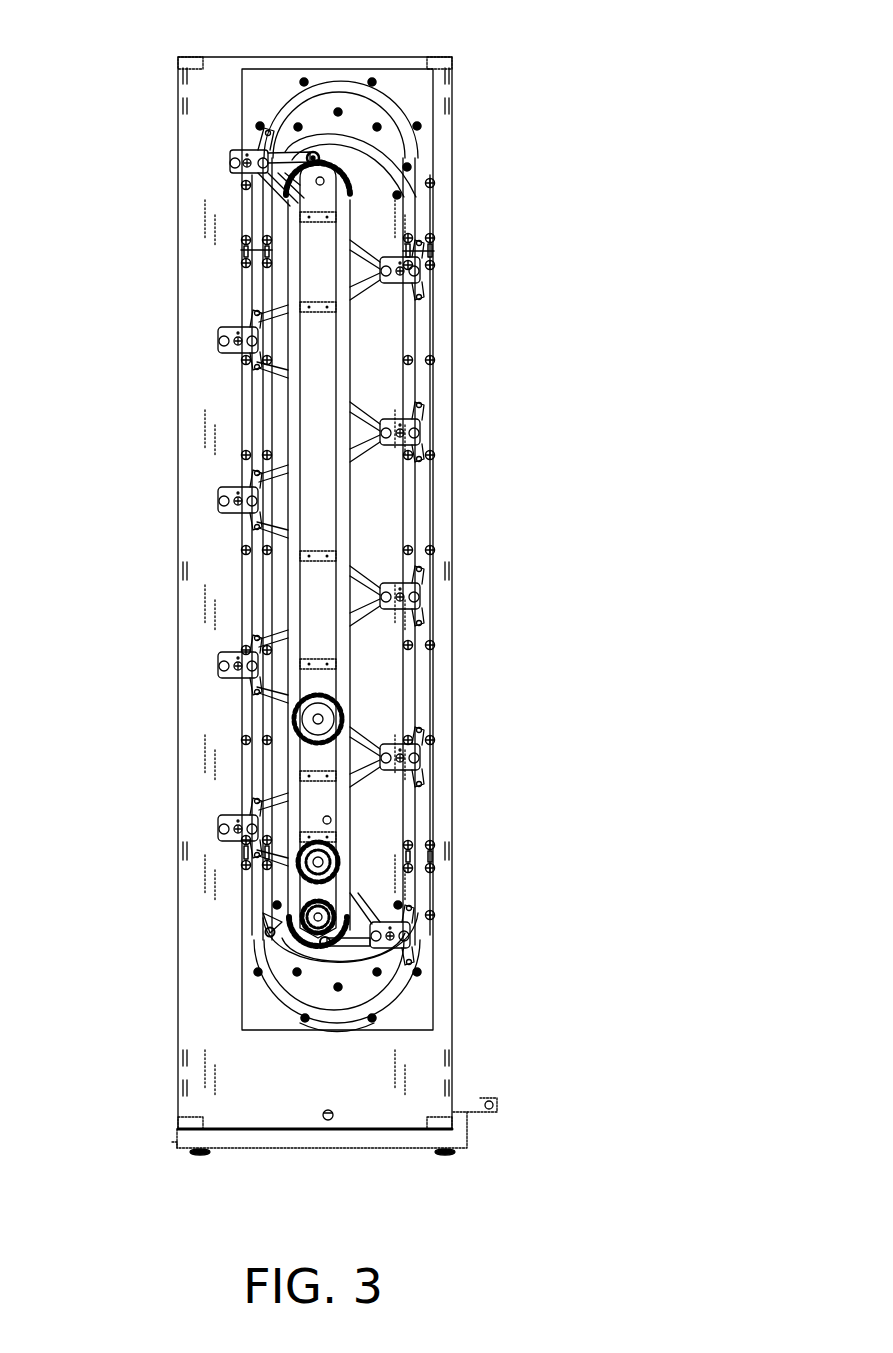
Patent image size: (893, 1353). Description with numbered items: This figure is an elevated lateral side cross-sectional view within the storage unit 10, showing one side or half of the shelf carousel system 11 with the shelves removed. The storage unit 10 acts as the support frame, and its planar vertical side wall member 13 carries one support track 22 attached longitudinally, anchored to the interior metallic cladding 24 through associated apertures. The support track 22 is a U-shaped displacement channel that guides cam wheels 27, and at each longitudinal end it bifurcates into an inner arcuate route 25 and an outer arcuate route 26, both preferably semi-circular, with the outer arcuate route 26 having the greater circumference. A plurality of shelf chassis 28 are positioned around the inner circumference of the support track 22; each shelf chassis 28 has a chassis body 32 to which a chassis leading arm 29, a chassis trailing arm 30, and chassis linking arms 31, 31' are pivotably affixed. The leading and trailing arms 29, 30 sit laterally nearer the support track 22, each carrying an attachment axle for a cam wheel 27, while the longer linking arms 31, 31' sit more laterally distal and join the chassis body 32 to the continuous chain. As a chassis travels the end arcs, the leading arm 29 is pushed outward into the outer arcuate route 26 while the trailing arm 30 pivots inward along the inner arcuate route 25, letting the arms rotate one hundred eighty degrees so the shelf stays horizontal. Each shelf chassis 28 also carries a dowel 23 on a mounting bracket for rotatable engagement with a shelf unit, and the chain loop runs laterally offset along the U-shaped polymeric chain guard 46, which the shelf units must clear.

The storage unit 10 is at (380, 1113).
The shelf carousel system 11 is at (60, 69).
The side wall member 13 is at (202, 969).
The support track 22 is at (342, 1034).
The dowel 23 is at (399, 590).
The interior metallic cladding 24 is at (428, 1021).
The inner arcuate route 25 is at (378, 154).
The outer arcuate route 26 is at (343, 88).
The cam wheel 27 is at (422, 300).
The shelf chassis 28 is at (231, 147).
The chassis leading arm 29 is at (257, 526).
The chassis trailing arm 30 is at (253, 316).
The chassis linking arm 31 is at (394, 739).
The chassis linking arm 31' is at (377, 638).
The chassis body 32 is at (252, 812).
The U-shaped polymeric chain guard 46 is at (341, 366).